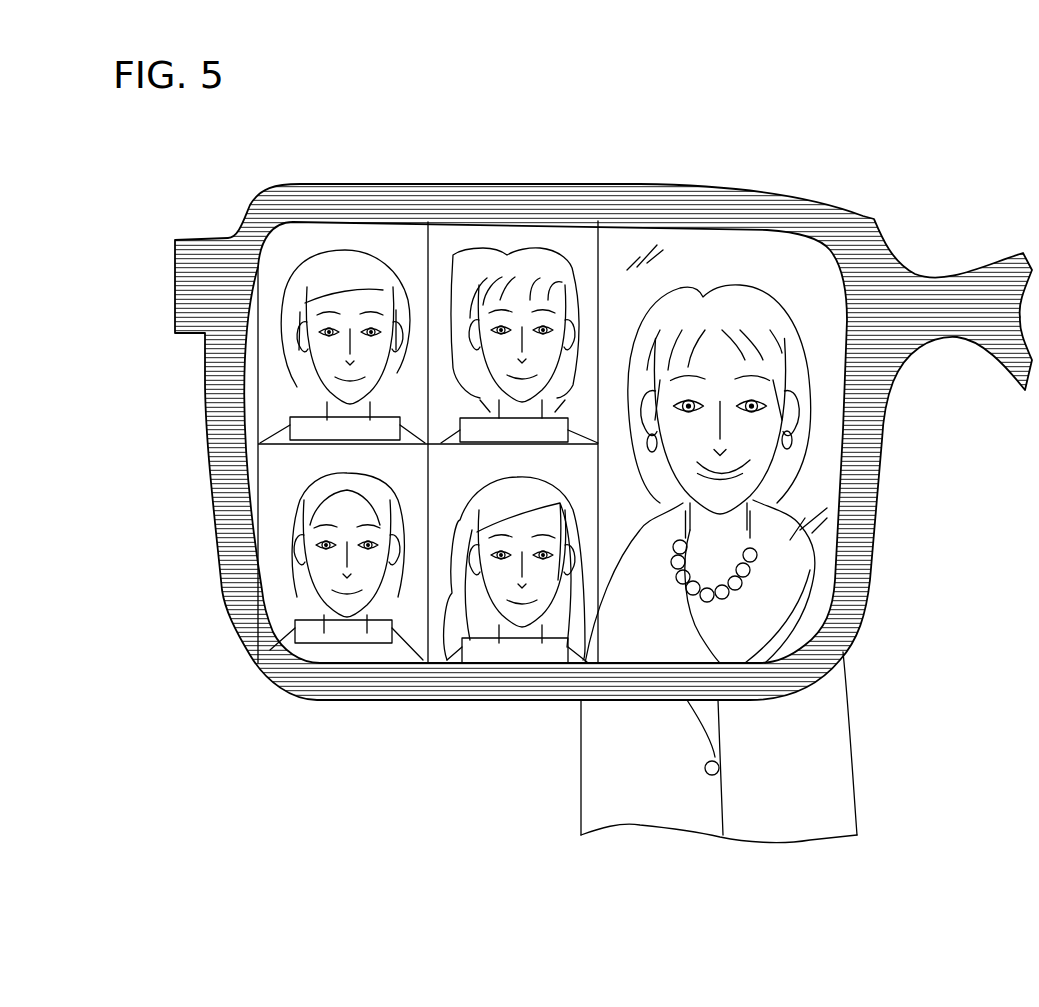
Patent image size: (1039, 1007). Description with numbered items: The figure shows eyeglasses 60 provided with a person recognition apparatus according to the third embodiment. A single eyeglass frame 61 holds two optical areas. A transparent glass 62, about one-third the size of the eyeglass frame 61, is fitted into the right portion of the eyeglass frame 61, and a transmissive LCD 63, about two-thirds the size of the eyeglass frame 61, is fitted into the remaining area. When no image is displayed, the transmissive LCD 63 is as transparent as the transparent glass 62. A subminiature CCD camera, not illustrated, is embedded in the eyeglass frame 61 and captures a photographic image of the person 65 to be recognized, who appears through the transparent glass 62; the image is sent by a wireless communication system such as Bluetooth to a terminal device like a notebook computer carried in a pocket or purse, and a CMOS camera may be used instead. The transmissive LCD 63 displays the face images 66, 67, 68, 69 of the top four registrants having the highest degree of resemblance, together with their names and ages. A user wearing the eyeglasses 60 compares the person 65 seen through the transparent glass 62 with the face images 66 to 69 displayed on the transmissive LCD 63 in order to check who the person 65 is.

The eyeglasses 60 is at (871, 205).
The eyeglass frame 61 is at (295, 700).
The transparent glass 62 is at (717, 240).
The transmissive LCD 63 is at (608, 249).
The person 65 is at (827, 732).
The face image 66 is at (523, 263).
The face image 67 is at (493, 583).
The face image 68 is at (323, 368).
The face image 69 is at (330, 567).